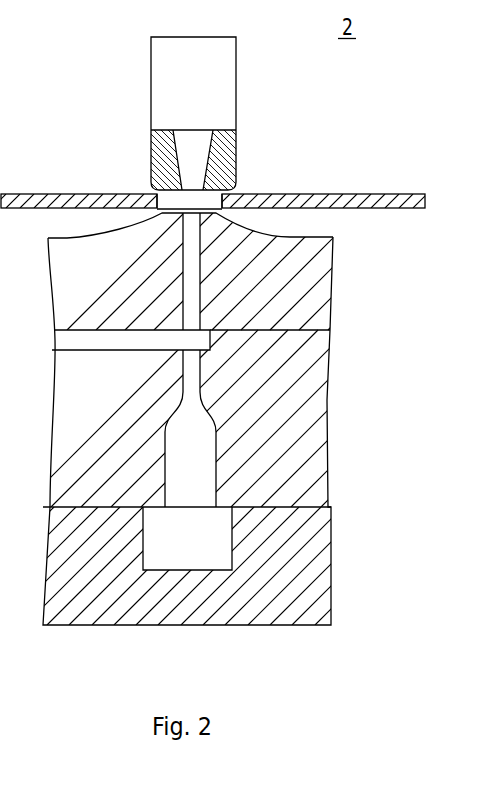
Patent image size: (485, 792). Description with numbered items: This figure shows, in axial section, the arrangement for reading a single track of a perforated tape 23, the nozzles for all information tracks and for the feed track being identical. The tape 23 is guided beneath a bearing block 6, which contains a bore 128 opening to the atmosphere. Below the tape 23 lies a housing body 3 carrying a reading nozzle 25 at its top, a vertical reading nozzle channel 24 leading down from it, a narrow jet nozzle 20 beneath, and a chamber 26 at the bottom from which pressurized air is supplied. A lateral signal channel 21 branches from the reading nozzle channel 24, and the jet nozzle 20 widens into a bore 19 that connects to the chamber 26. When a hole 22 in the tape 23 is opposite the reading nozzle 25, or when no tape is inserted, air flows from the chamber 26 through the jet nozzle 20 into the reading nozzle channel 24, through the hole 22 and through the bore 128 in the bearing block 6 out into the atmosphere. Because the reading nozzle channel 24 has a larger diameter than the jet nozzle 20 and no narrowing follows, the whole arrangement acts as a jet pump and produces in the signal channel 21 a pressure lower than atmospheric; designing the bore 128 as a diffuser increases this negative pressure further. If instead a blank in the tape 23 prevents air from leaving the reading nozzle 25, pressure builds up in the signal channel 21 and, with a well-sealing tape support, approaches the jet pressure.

The housing body 3 is at (64, 461).
The bearing block 6 is at (237, 98).
The bore 128 is at (192, 155).
The reading nozzle 25 is at (191, 224).
The hole 22 is at (213, 203).
The tape 23 is at (375, 203).
The reading nozzle channel 24 is at (190, 287).
The signal channel 21 is at (82, 340).
The jet nozzle 20 is at (188, 367).
The bore 19 is at (193, 478).
The chamber 26 is at (190, 526).